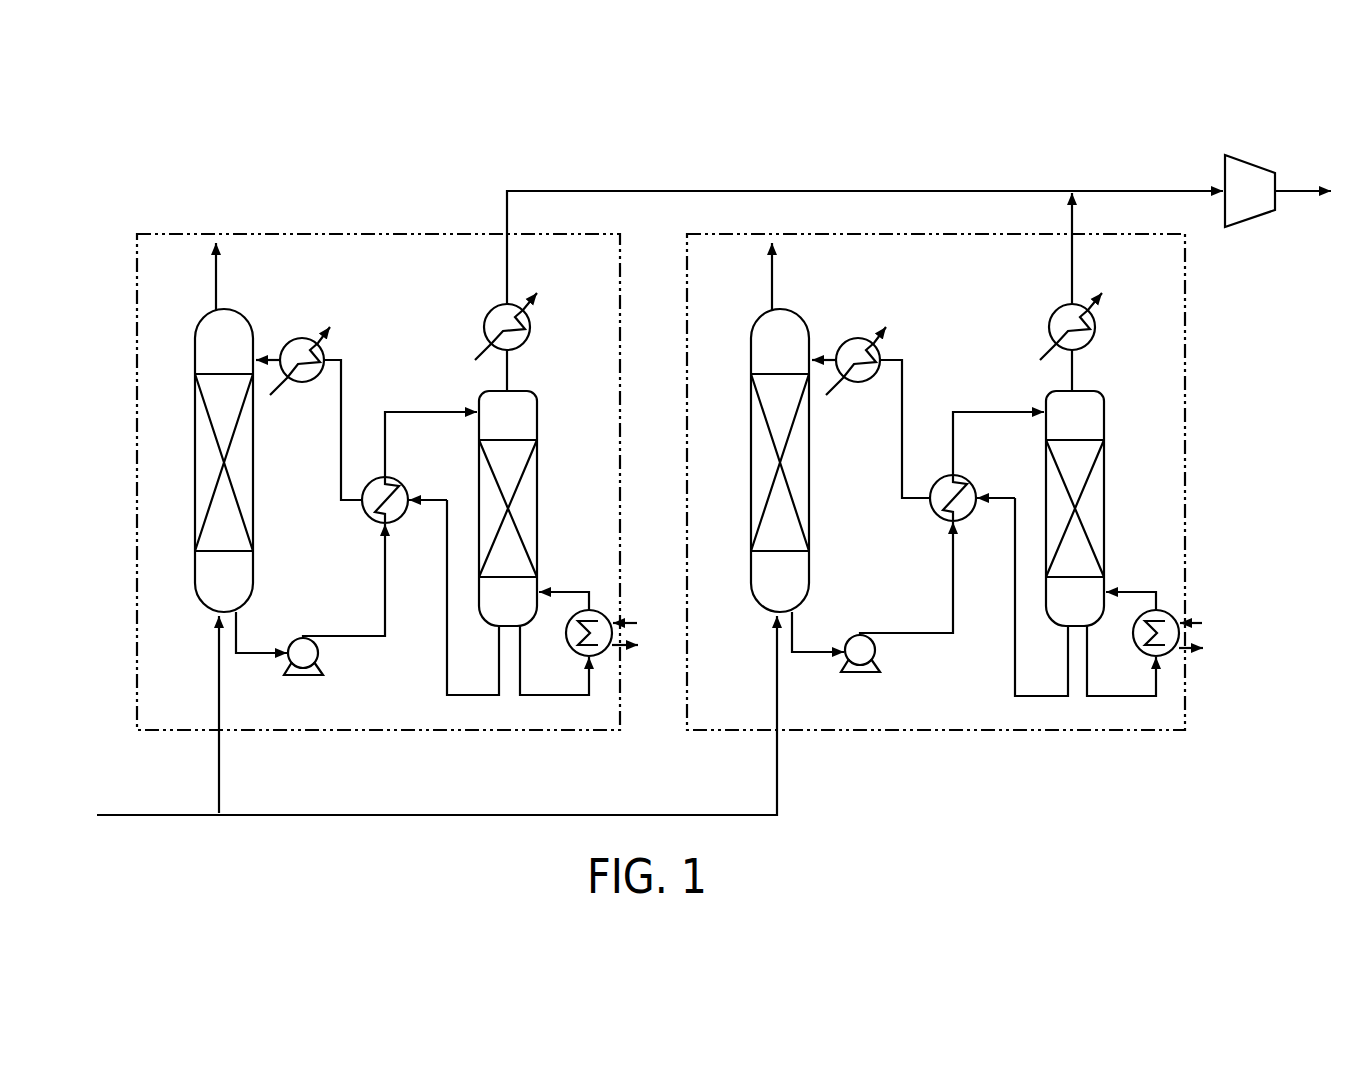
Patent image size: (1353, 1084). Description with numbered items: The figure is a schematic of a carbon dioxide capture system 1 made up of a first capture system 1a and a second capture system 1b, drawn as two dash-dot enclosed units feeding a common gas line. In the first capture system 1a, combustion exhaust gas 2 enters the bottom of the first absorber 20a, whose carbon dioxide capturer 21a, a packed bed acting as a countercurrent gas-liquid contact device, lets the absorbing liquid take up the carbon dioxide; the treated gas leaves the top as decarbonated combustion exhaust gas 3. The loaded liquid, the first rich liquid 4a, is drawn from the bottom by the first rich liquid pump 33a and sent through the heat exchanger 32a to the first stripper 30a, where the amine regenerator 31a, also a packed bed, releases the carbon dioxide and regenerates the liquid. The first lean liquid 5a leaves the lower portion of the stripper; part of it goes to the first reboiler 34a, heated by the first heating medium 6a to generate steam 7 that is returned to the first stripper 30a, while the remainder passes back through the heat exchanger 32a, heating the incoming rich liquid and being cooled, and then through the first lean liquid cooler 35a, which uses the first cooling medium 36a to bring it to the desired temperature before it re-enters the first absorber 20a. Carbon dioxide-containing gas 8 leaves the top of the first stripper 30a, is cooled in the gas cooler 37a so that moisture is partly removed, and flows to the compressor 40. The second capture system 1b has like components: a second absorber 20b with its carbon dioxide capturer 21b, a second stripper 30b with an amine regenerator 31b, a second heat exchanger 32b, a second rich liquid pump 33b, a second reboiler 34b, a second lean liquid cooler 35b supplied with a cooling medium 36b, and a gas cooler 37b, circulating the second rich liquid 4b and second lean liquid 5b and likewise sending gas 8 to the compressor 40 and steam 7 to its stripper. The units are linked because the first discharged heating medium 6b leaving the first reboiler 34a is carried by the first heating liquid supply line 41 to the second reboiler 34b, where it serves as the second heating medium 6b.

The carbon dioxide capture system 1 is at (110, 188).
The first capture system 1a is at (133, 529).
The second capture system 1b is at (1189, 377).
The combustion exhaust gas 2 is at (165, 799).
The decarbonated combustion exhaust gas 3 is at (204, 262).
The first rich liquid 4a is at (381, 650).
The second rich liquid 4b is at (934, 648).
The first lean liquid 5a is at (554, 708).
The second lean liquid 5b is at (1127, 710).
The first heating medium 6a is at (648, 609).
The first discharged heating medium 6b is at (610, 660).
The steam 7 is at (556, 575).
The carbon dioxide-containing gas 8 is at (518, 243).
The first absorber 20a is at (192, 369).
The second absorber 20b is at (749, 369).
The carbon dioxide capturer 21a is at (197, 466).
The packing of first column of second unit 21b is at (755, 466).
The first stripper 30a is at (476, 390).
The second stripper 30b is at (1043, 390).
The amine regenerator 31a is at (539, 493).
The amine regenerator 31b is at (1105, 493).
The first heat exchanger 32a is at (368, 519).
The second heat exchanger 32b is at (936, 516).
The first rich liquid pump 33a is at (306, 677).
The second rich liquid pump 33b is at (862, 676).
The first reboiler 34a is at (570, 650).
The second reboiler 34b is at (1138, 650).
The first lean liquid cooler 35a is at (302, 338).
The second lean liquid cooler 35b is at (858, 338).
The first cooling medium 36a is at (293, 395).
The cooling medium of second unit 36b is at (849, 395).
The gas cooler 37a is at (491, 311).
The gas cooler 37b is at (1056, 311).
The compressor 40 is at (1256, 163).
The first heating liquid supply line 41 is at (638, 644).